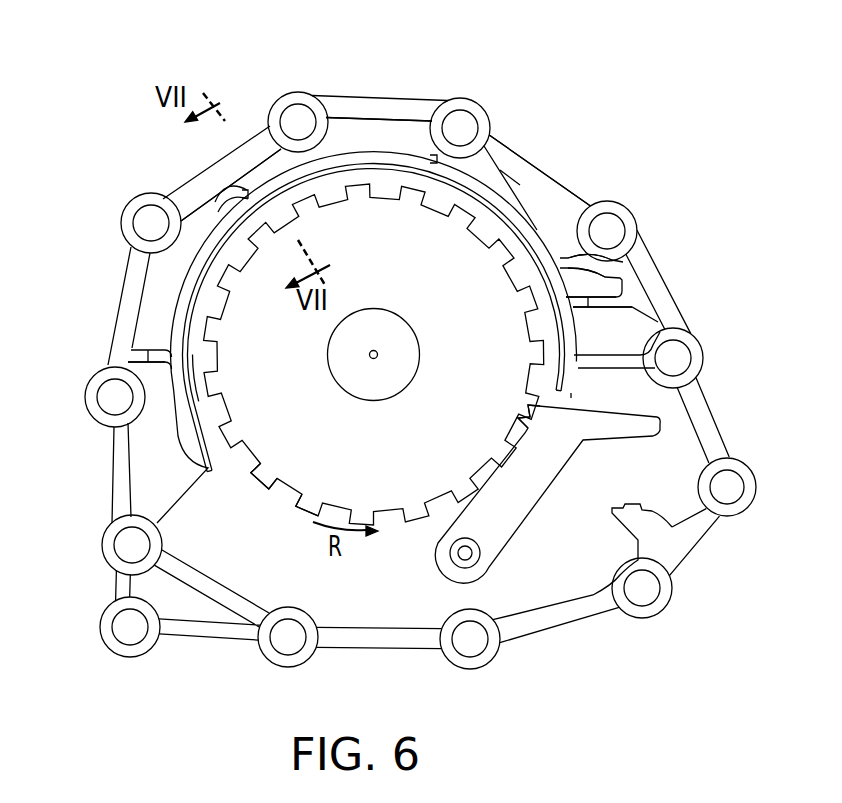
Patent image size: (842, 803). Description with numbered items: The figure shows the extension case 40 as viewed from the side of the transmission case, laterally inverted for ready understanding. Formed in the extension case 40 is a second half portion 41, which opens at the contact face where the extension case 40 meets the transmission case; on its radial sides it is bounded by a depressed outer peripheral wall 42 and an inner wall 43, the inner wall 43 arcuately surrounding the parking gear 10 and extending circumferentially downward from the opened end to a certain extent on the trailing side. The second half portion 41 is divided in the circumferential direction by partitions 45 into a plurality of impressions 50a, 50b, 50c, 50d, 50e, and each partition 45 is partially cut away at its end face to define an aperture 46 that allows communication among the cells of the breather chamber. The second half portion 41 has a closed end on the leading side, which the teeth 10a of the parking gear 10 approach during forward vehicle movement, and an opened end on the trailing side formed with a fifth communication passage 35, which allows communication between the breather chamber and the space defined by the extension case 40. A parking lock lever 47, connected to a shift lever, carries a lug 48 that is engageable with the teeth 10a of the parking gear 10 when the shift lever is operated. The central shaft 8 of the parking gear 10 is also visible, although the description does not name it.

The shaft 8 is at (365, 382).
The parking gear 10 is at (280, 463).
The teeth 10a is at (288, 500).
The fifth communication passage 35 is at (145, 373).
The extension case 40 is at (399, 335).
The second half portion 41 is at (378, 152).
The outer peripheral wall 42 is at (515, 187).
The inner wall 43 is at (538, 224).
The partitions 45 is at (435, 157).
The aperture 46 is at (510, 152).
The parking lock lever 47 is at (537, 505).
The lug 48 is at (525, 403).
The impression 50a is at (157, 302).
The impression 50b is at (345, 125).
The impression 50c is at (512, 157).
The impression 50d is at (598, 285).
The impression 50e is at (620, 324).